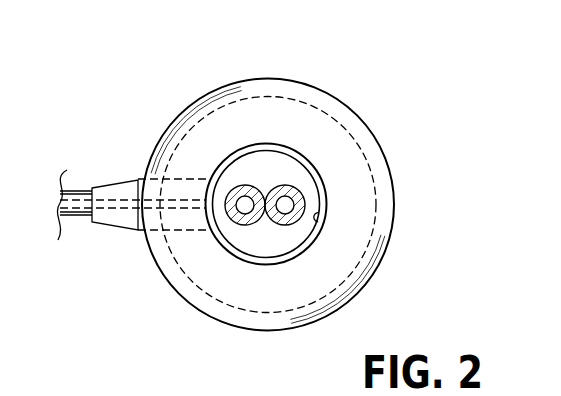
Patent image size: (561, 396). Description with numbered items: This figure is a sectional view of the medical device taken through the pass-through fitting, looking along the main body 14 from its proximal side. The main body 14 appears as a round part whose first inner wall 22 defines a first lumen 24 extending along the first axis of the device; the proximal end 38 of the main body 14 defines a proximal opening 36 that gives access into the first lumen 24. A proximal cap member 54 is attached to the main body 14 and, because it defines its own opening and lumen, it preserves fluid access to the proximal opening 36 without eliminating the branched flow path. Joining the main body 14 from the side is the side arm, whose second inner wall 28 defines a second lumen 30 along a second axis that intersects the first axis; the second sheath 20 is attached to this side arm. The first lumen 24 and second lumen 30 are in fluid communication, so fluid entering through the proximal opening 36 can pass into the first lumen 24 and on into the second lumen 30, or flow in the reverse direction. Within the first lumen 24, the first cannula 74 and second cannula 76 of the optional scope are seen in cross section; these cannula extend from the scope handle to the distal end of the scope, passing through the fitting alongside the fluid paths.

The main body 14 is at (372, 234).
The second sheath 20 is at (73, 191).
The first inner wall 22 is at (315, 207).
The first lumen 24 is at (297, 182).
The second inner wall 28 is at (150, 190).
The second lumen 30 is at (117, 207).
The proximal opening 36 is at (242, 240).
The proximal end 38 is at (265, 276).
The proximal cap member 54 is at (351, 291).
The first cannula 74 is at (250, 185).
The second cannula 76 is at (278, 186).